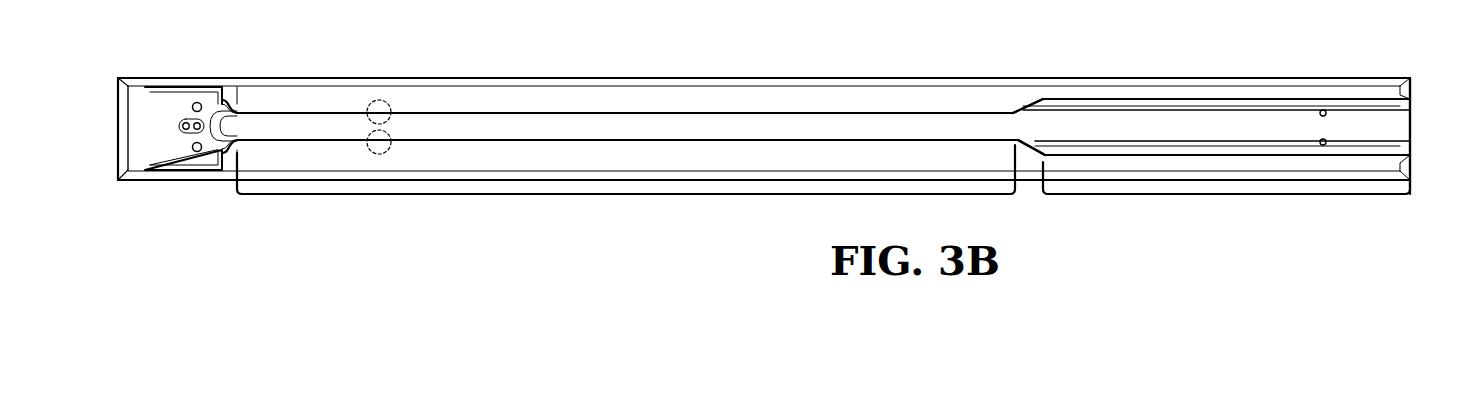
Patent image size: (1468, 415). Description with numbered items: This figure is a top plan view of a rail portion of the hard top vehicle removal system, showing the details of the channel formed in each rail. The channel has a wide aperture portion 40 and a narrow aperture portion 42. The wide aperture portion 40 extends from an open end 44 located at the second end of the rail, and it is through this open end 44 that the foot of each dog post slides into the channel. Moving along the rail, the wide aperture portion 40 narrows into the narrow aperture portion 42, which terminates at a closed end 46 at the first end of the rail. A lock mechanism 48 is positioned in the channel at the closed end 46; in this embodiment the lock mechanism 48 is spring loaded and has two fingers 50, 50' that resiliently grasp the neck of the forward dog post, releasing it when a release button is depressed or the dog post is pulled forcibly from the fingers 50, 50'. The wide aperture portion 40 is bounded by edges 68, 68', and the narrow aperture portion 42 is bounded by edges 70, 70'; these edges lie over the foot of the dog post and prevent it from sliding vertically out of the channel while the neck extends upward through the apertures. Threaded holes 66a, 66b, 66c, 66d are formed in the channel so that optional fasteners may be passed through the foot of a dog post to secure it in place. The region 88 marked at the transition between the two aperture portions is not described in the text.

The wide aperture portion 40 is at (1245, 194).
The narrow aperture portion 42 is at (602, 194).
The open end 44 is at (1421, 121).
The closed end 46 is at (116, 119).
The lock mechanism 48 is at (180, 102).
The spring loaded finger 50 is at (261, 68).
The spring loaded finger 50' is at (213, 191).
The threaded hole 66a is at (379, 154).
The threaded hole 66b is at (379, 100).
The threaded hole 66c is at (1323, 109).
The threaded hole 66d is at (1323, 146).
The edge of wide aperture portion 68 is at (1226, 50).
The edge of wide aperture portion 68' is at (1227, 204).
The edge of narrow aperture portion 70 is at (823, 68).
The edge of narrow aperture portion 70' is at (823, 187).
The transition region 88 is at (1064, 126).